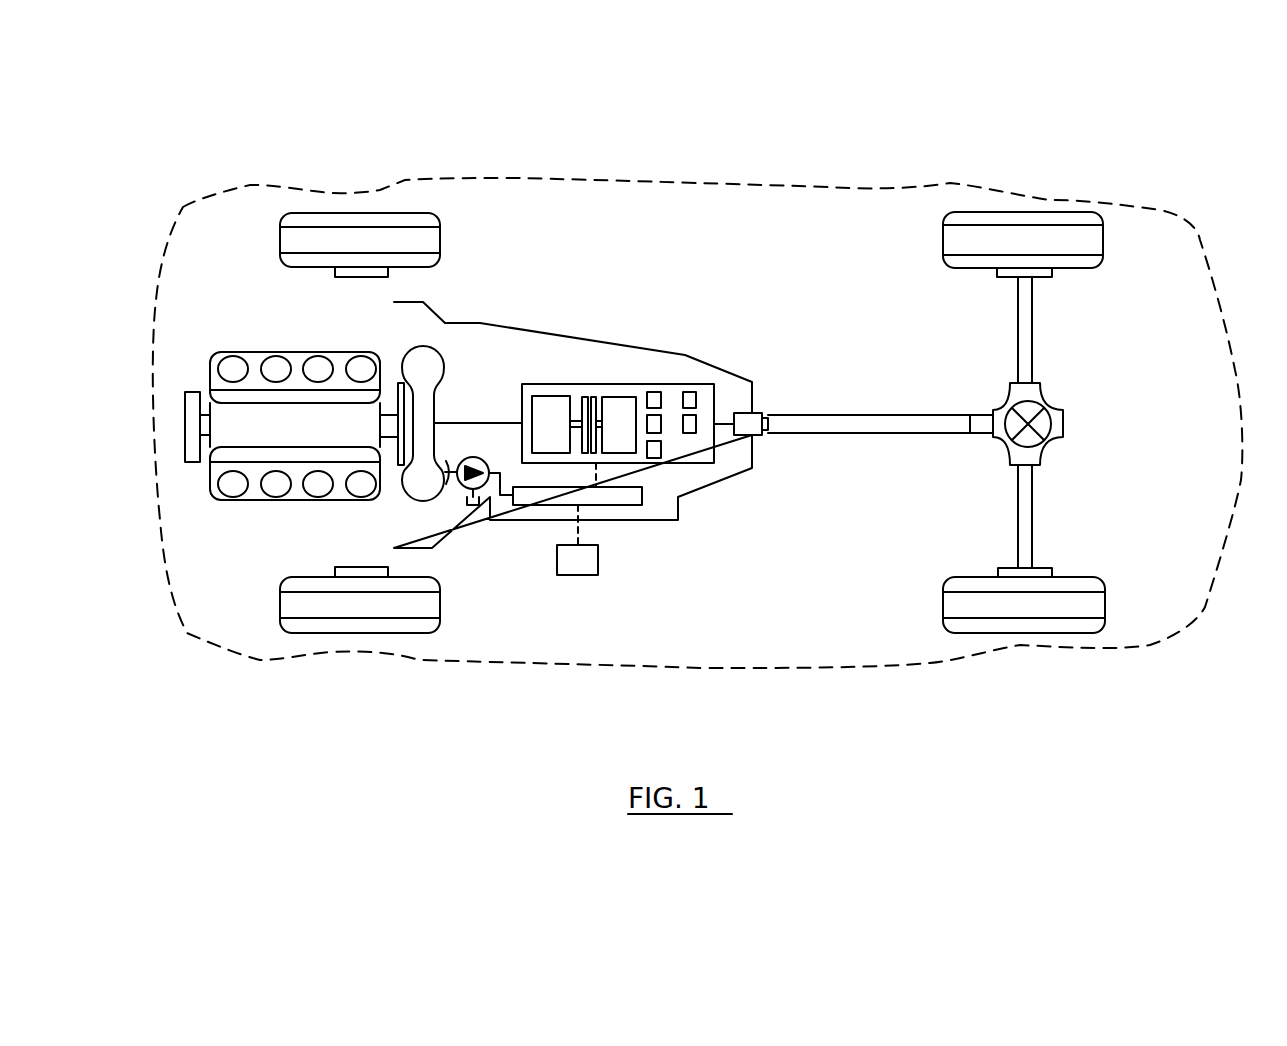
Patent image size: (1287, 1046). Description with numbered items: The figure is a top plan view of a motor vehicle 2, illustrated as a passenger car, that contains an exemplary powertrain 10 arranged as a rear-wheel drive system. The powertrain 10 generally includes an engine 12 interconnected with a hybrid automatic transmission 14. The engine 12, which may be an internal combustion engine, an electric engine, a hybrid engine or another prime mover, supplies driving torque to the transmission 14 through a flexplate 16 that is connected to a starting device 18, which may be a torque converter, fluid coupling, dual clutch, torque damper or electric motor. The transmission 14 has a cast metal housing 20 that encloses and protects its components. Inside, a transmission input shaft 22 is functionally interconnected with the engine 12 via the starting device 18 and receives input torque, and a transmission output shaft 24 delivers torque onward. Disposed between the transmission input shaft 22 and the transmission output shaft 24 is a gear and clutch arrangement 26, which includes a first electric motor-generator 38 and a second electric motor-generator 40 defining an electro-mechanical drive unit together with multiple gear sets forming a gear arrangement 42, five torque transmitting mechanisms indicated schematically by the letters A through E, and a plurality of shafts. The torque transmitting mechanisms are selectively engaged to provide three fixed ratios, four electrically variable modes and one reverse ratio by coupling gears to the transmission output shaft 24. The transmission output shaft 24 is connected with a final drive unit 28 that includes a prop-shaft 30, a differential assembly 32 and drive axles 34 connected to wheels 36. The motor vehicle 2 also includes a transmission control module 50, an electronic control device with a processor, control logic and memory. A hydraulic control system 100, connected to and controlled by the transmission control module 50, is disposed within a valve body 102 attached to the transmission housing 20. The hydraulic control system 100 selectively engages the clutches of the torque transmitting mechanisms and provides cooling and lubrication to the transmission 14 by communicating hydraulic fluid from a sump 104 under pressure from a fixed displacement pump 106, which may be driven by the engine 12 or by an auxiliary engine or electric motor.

The motor vehicle 2 is at (828, 187).
The powertrain 10 is at (697, 335).
The engine 12 is at (275, 436).
The hybrid automatic transmission 14 is at (570, 378).
The flexplate 16 is at (402, 383).
The starting device 18 is at (423, 347).
The housing 20 is at (725, 423).
The transmission input shaft 22 is at (487, 423).
The transmission output shaft 24 is at (752, 382).
The gear and clutch arrangement 26 is at (615, 384).
The final drive unit 28 is at (902, 379).
The prop-shaft 30 is at (838, 415).
The differential assembly 32 is at (1063, 425).
The drive axles 34 is at (1032, 333).
The wheels 36 is at (1012, 212).
The first electric motor-generator 38 is at (547, 397).
The second electric motor-generator 40 is at (621, 407).
The gear arrangement 42 is at (588, 397).
The transmission control module 50 is at (571, 578).
The hydraulic control system 100 is at (625, 505).
The valve body 102 is at (527, 505).
The sump 104 is at (473, 506).
The fixed displacement pump 106 is at (465, 487).